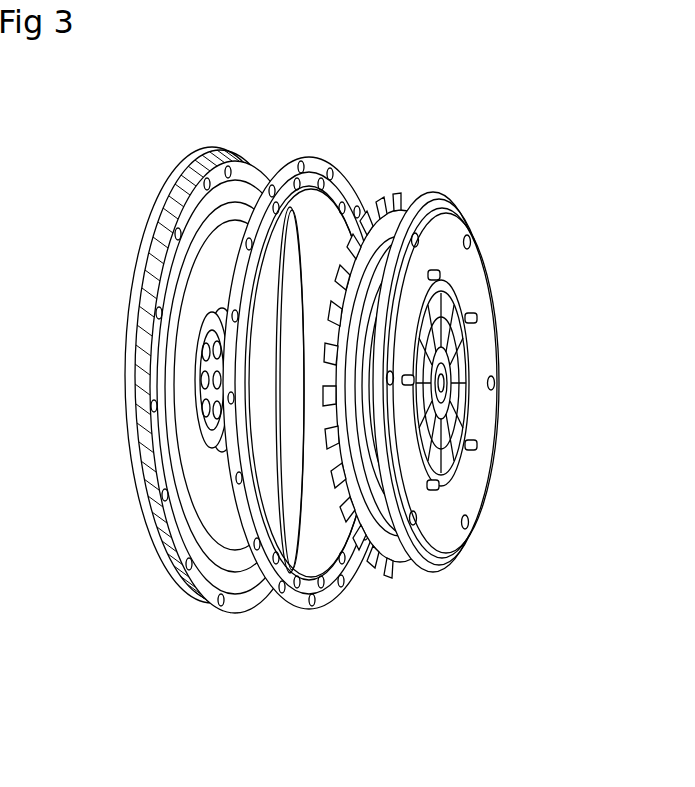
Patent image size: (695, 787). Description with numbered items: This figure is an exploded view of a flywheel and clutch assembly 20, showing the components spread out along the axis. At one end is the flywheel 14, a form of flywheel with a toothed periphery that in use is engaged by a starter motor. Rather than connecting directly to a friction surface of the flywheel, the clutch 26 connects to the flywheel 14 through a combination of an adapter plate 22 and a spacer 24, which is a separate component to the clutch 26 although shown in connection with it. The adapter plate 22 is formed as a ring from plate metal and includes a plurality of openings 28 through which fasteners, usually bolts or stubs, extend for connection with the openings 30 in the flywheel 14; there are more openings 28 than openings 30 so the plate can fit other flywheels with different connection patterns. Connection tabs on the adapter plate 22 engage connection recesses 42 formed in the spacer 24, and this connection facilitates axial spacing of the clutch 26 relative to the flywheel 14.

The flywheel 14 is at (150, 473).
The clutch assembly 20 is at (488, 347).
The adapter plate 22 is at (326, 175).
The spacer 24 is at (412, 192).
The clutch 26 is at (475, 495).
The openings 28 is at (317, 598).
The openings 30 is at (210, 583).
The connection recesses 42 is at (362, 560).